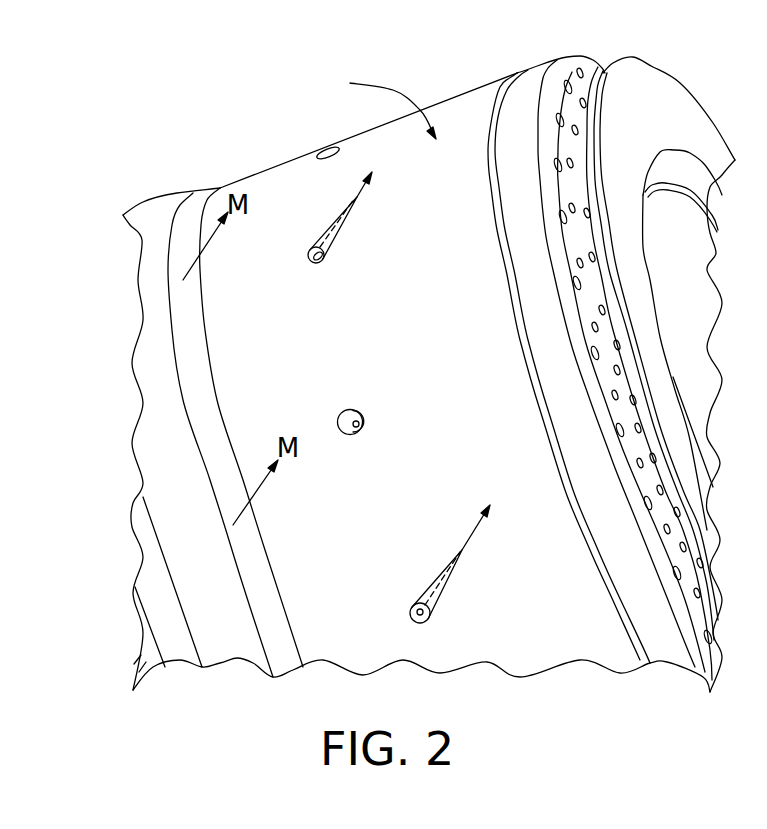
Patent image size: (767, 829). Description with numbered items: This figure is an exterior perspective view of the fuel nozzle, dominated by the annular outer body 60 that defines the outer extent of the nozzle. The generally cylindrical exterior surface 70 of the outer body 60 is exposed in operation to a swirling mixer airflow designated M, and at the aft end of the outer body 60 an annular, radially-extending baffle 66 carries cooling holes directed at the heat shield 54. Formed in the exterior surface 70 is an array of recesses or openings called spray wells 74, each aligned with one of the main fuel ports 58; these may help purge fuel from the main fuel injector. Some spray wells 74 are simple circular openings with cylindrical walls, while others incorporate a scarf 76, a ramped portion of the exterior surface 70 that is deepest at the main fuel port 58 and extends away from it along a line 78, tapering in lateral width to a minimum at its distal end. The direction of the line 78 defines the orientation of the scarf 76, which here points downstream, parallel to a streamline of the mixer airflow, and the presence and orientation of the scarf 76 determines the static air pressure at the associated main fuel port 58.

The heat shield 54 is at (648, 100).
The main fuel port 58 is at (320, 263).
The outer body 60 is at (455, 97).
The baffle 66 is at (597, 72).
The exterior surface 70 is at (377, 104).
The spray well 74 is at (323, 146).
The scarf 76 is at (332, 248).
The line 78 is at (437, 348).